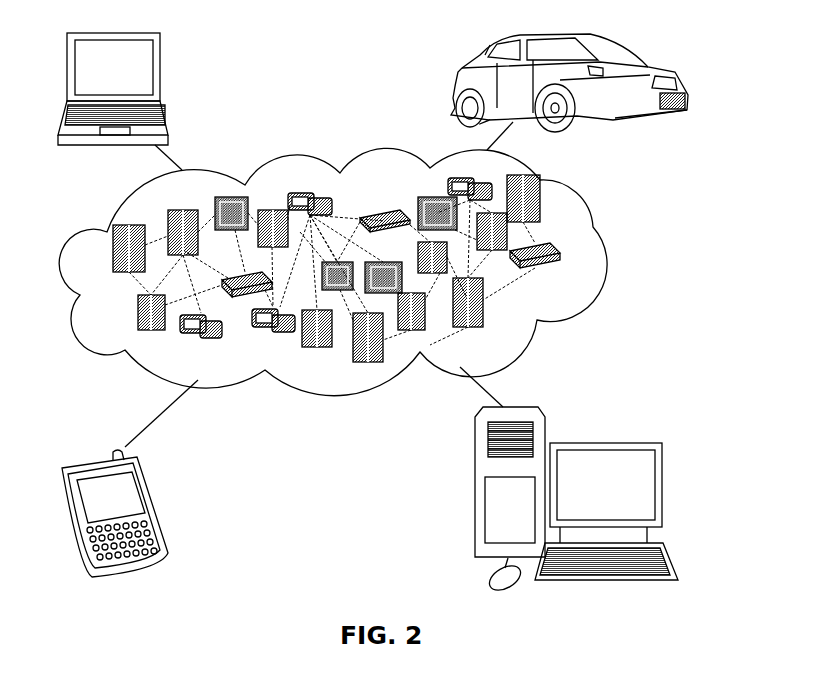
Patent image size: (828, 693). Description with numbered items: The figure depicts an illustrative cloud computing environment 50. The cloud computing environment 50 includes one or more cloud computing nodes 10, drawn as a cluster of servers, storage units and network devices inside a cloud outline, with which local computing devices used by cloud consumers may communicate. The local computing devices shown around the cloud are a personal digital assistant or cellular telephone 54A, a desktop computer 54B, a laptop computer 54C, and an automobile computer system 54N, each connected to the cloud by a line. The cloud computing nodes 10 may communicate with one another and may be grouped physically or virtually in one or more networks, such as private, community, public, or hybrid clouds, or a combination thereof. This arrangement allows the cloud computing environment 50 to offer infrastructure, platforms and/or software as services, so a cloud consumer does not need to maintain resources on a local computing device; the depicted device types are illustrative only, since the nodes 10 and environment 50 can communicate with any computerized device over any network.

The cloud computing nodes 10 is at (565, 276).
The cloud computing environment 50 is at (599, 256).
The personal digital assistant or cellular telephone 54A is at (160, 505).
The desktop computer 54B is at (612, 430).
The laptop computer 54C is at (163, 75).
The automobile computer system 54N is at (455, 82).